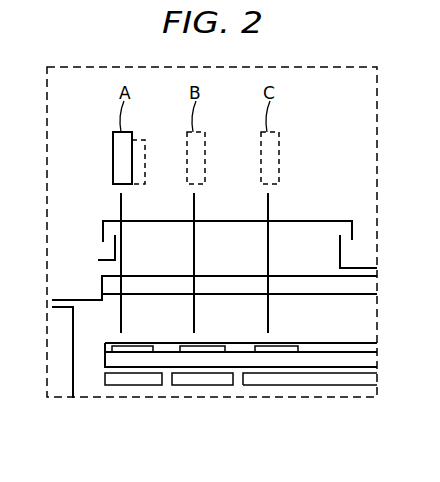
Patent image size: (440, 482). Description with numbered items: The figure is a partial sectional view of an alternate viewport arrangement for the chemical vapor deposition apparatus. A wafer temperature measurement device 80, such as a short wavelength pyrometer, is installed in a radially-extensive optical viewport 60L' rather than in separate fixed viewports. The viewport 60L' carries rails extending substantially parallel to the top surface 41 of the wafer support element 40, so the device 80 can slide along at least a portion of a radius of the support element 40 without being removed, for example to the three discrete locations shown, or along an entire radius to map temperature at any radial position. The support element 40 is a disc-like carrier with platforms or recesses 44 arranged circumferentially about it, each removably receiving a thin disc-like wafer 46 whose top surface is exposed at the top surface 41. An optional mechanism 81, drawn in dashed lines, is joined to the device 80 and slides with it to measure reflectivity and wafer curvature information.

The wafer temperature measurement device 80 is at (113, 160).
The mechanism for measuring reflectivity and wafer curvature 81 is at (143, 138).
The radially-extensive optical viewport 60L' is at (237, 219).
The wafer support element 40 is at (247, 330).
The top surface 41 is at (313, 343).
The wafer 46 is at (285, 343).
The platform or recess 44 is at (265, 352).